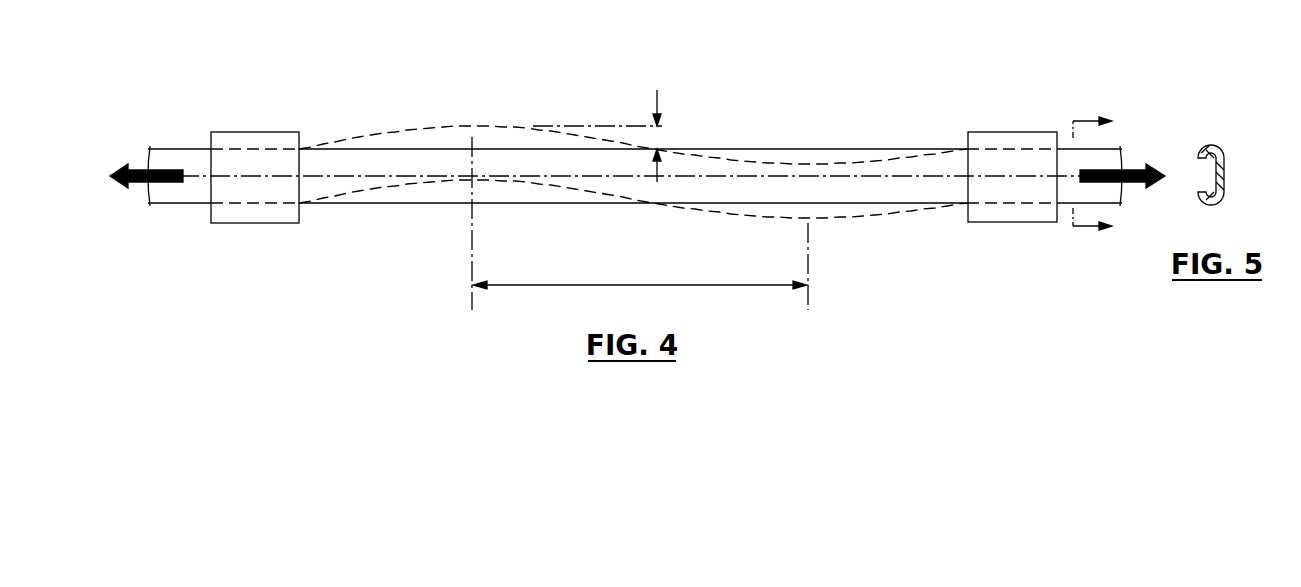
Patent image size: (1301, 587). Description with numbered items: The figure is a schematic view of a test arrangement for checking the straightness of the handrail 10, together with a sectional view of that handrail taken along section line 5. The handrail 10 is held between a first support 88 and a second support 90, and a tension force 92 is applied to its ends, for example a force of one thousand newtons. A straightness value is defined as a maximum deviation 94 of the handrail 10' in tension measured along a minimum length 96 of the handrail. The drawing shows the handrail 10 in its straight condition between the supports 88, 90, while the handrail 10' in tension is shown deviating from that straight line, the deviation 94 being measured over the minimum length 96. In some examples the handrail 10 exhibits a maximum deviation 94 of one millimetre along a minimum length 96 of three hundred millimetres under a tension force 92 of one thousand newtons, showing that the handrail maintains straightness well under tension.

In FIG. 4, the handrail 10 is at (635, 141).
In FIG. 5, the handrail 10 is at (1207, 135).
In FIG. 4, the handrail in tension 10' is at (633, 137).
In FIG. 4, the first support 88 is at (256, 132).
In FIG. 4, the second support 90 is at (1006, 132).
In FIG. 4, the tension force 92 is at (158, 172).
In FIG. 4, the maximum deviation 94 is at (661, 95).
In FIG. 4, the minimum length 96 is at (668, 285).
In FIG. 4, the section line 5- 5 is at (1102, 174).